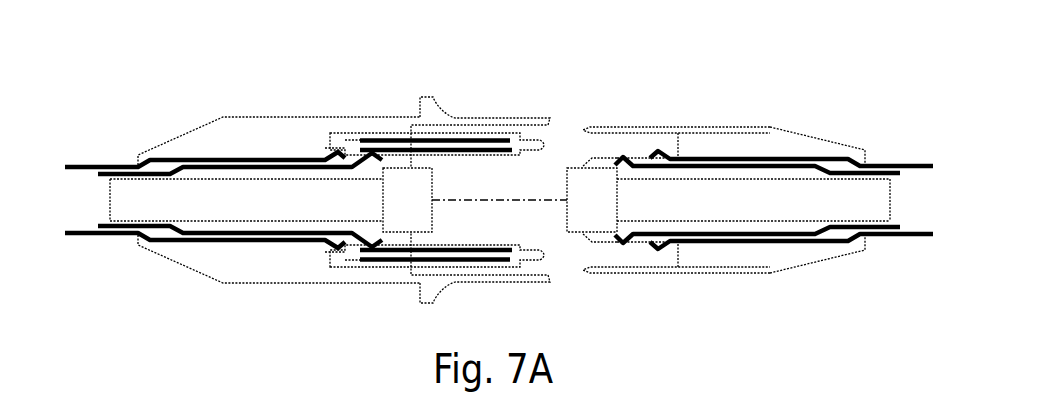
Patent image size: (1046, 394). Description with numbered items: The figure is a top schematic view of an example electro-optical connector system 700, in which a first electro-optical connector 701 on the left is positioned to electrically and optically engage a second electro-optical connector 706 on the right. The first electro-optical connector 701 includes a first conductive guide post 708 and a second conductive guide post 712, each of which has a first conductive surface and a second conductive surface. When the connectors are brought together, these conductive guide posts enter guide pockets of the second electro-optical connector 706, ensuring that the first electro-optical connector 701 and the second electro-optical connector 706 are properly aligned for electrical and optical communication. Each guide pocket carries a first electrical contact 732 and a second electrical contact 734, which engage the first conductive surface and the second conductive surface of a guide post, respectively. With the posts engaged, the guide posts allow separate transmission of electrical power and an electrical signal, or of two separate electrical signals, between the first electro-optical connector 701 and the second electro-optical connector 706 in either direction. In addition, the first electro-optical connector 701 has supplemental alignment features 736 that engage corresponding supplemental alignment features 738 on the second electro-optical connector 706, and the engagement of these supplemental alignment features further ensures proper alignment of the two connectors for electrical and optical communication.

The electro-optical connector system 700 is at (182, 58).
The first electro-optical connector 701 is at (317, 102).
The second electro-optical connector 706 is at (819, 113).
The first conductive guide post 708 is at (412, 248).
The second conductive guide post 712 is at (410, 130).
The first electrical contact 732 is at (623, 158).
The second electrical contact 734 is at (672, 152).
The supplemental alignment features 736 is at (516, 121).
The supplemental alignment features 738 is at (613, 268).